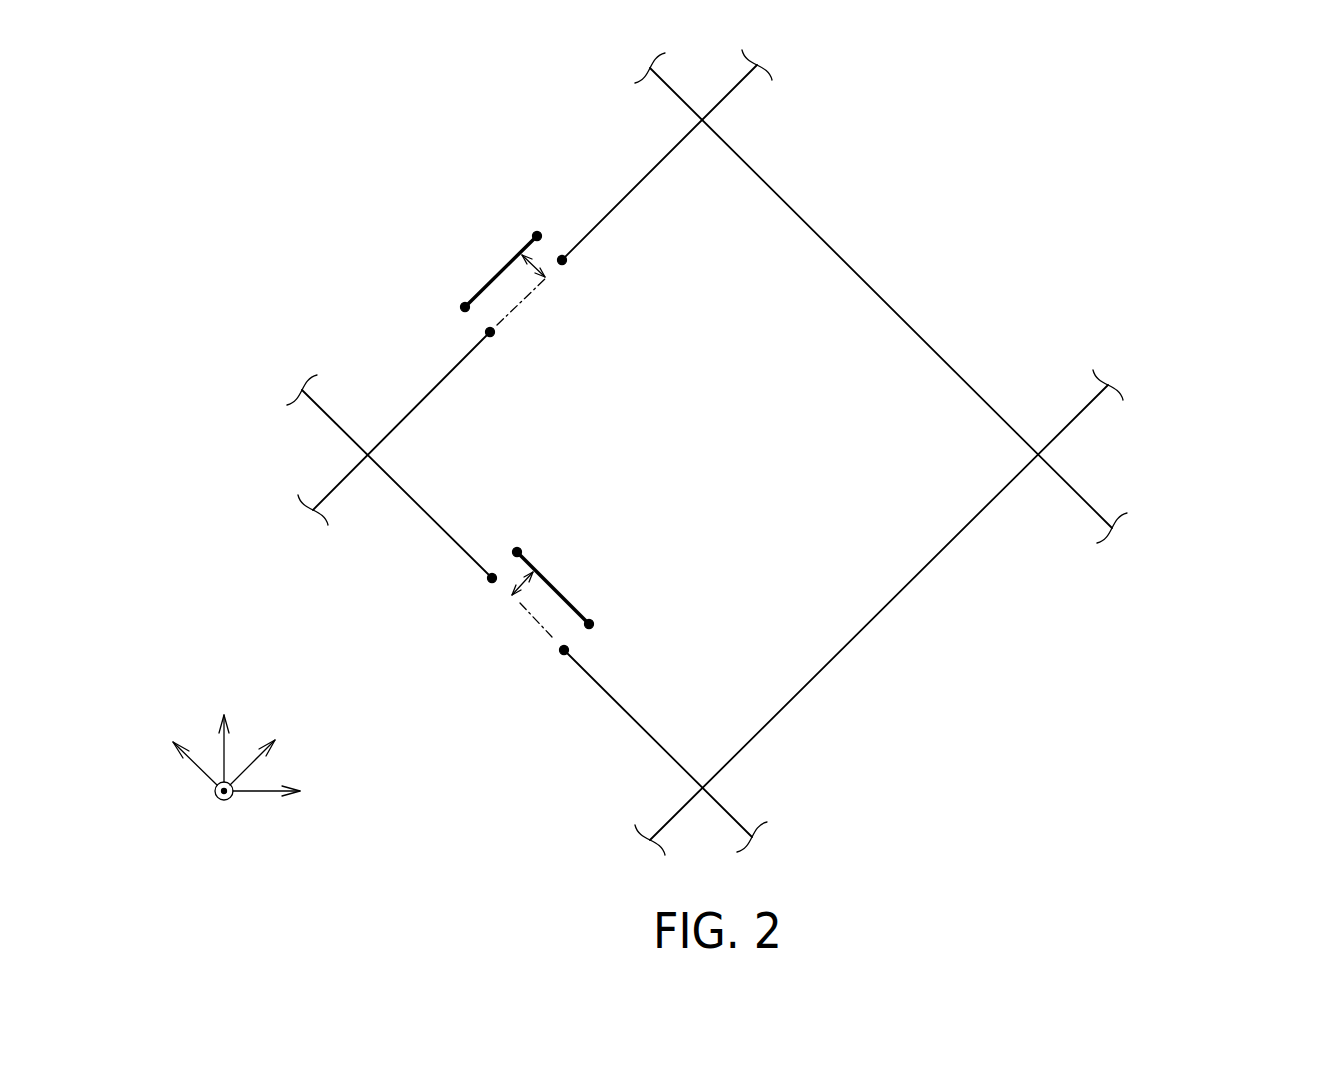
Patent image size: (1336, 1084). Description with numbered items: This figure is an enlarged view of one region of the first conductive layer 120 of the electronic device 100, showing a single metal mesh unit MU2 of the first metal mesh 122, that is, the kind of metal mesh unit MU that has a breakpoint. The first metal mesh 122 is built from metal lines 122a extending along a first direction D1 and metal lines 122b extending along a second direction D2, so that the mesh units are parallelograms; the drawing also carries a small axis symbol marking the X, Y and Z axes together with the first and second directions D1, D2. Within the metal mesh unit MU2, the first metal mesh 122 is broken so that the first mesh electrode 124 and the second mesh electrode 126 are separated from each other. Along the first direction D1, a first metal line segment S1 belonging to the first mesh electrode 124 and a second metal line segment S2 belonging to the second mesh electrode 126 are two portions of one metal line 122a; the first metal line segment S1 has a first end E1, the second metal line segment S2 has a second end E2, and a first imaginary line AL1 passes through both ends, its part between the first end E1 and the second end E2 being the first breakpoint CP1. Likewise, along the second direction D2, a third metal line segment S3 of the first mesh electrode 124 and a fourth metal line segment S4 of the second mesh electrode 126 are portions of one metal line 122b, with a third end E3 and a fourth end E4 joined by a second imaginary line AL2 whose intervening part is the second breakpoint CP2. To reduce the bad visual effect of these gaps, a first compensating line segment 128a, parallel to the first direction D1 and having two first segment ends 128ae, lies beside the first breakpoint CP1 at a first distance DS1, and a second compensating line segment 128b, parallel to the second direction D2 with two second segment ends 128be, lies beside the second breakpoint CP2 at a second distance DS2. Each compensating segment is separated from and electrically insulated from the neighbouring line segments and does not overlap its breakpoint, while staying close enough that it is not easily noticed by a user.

The first conductive layer 120 is at (1087, 148).
The electronic device 100 is at (1177, 108).
The first metal mesh 122 is at (702, 452).
The metal line 122a is at (963, 528).
The metal line 122b is at (935, 348).
The first mesh electrode 124 is at (1110, 378).
The second mesh electrode 126 is at (294, 372).
The metal mesh unit MU2 is at (955, 457).
The metal mesh unit MU is at (891, 443).
The first metal line segment S1 is at (630, 193).
The second metal line segment S2 is at (432, 393).
The third metal line segment S3 is at (643, 728).
The fourth metal line segment S4 is at (435, 525).
The first compensating line segment 128a is at (497, 275).
The first segment end 128ae is at (537, 236).
The second compensating line segment 128b is at (557, 592).
The second segment end 128be is at (517, 552).
The first end E1 is at (562, 260).
The second end E2 is at (490, 332).
The third end E3 is at (564, 650).
The fourth end E4 is at (492, 578).
The first imaginary line AL1 is at (522, 300).
The second imaginary line AL2 is at (533, 620).
The first distance DS1 is at (535, 262).
The second distance DS2 is at (522, 583).
The first breakpoint CP1 is at (480, 319).
The second breakpoint CP2 is at (572, 635).
The first direction D1 is at (265, 749).
The second direction D2 is at (176, 749).
The X axis X is at (278, 794).
The Y axis Y is at (223, 732).
The Z axis Z is at (224, 810).